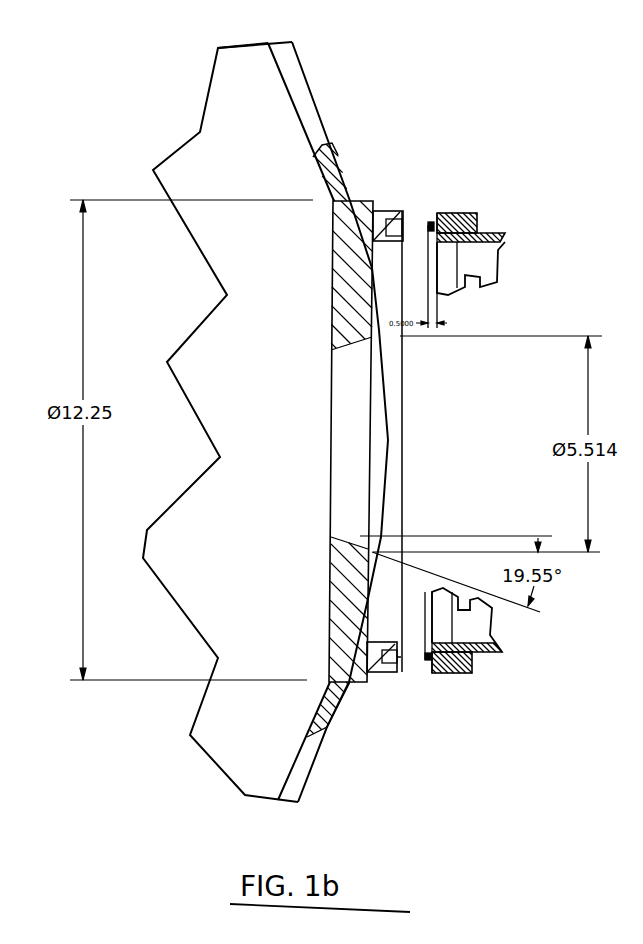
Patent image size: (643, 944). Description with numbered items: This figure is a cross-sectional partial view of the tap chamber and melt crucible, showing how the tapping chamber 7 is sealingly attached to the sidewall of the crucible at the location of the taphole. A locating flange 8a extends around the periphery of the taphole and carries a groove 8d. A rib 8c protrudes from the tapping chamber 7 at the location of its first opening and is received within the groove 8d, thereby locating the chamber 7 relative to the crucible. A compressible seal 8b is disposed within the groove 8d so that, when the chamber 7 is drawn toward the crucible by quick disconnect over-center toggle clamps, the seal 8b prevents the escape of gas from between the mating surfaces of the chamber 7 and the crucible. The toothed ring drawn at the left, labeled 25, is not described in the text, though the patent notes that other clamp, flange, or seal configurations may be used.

The ring gear 25 is at (340, 153).
The tapping chamber 7 is at (508, 218).
The locating flange 8a is at (402, 213).
The compressible seal 8b is at (404, 214).
The rib 8c is at (425, 230).
The groove 8d is at (387, 664).